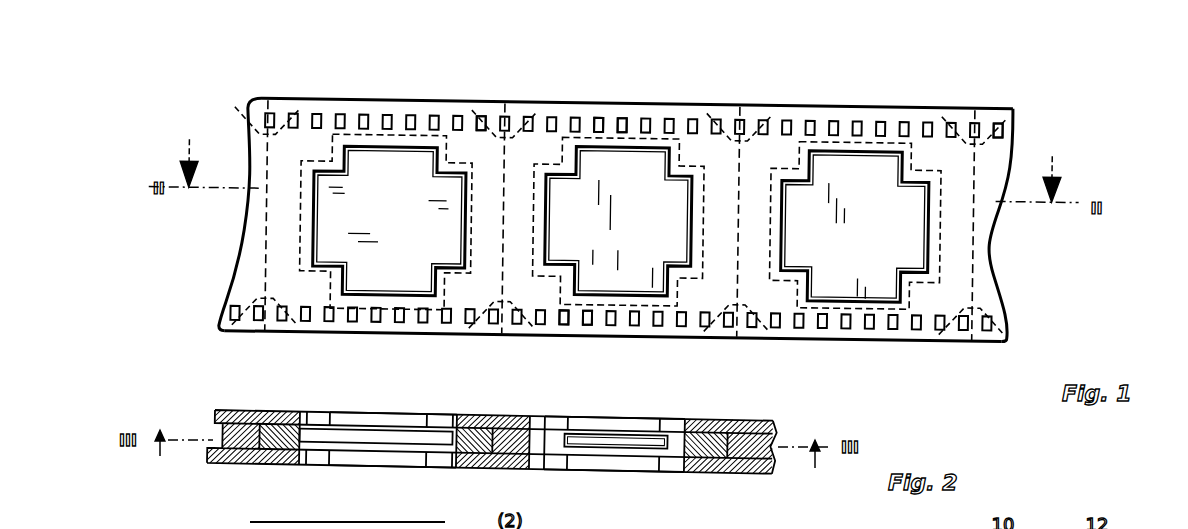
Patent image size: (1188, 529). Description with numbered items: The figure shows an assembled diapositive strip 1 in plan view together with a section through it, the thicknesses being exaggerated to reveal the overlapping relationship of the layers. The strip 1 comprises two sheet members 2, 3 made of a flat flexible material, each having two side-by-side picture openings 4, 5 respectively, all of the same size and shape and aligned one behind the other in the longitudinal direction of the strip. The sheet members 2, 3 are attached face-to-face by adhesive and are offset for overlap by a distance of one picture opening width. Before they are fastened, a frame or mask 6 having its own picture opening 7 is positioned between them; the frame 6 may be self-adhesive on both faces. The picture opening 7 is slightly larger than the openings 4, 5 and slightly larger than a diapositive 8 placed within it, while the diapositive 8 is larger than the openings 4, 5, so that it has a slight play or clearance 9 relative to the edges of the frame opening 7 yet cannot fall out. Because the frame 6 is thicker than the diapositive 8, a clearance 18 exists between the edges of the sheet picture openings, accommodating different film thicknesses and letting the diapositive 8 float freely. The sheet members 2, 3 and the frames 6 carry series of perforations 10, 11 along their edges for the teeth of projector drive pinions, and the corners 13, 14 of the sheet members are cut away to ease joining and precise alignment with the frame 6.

In FIG. 1, the diapositive strip 1 is at (217, 217).
In FIG. 1, the sheet member 2 is at (540, 113).
In FIG. 2, the sheet member 2 is at (513, 416).
In FIG. 1, the sheet member 3 is at (250, 281).
In FIG. 2, the sheet member 3 is at (272, 458).
In FIG. 1, the picture opening 4 is at (926, 212).
In FIG. 2, the picture opening 4 is at (335, 414).
In FIG. 1, the picture opening 5 is at (468, 212).
In FIG. 2, the picture opening 5 is at (313, 452).
In FIG. 1, the frame 6 is at (330, 108).
In FIG. 2, the frame 6 is at (530, 424).
In FIG. 1, the picture opening 7 is at (385, 142).
In FIG. 1, the diapositive 8 is at (345, 180).
In FIG. 2, the diapositive 8 is at (390, 432).
In FIG. 2, the clearance 9 is at (303, 411).
In FIG. 1, the perforations 10 is at (622, 108).
In FIG. 1, the perforations 11 is at (595, 319).
In FIG. 1, the corner 13 is at (268, 100).
In FIG. 1, the corner 14 is at (990, 130).
In FIG. 2, the clearance 18 is at (314, 421).